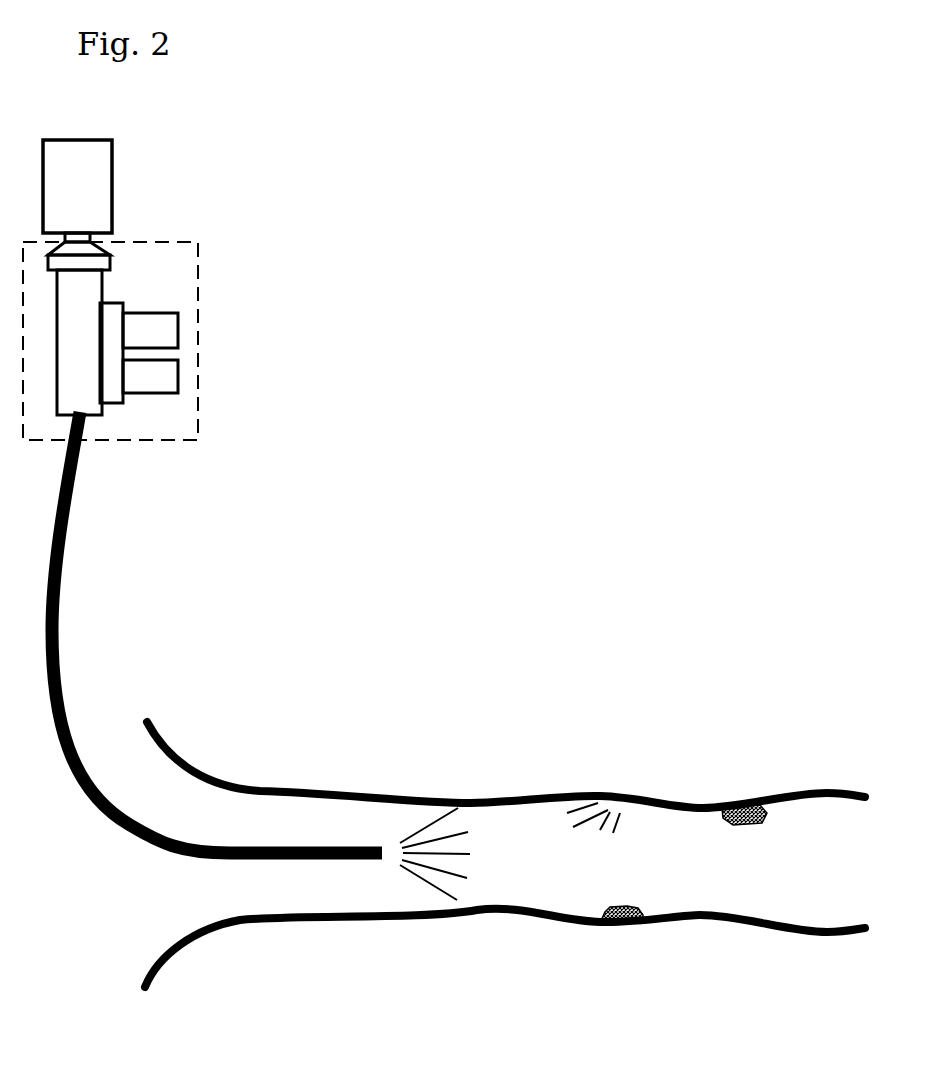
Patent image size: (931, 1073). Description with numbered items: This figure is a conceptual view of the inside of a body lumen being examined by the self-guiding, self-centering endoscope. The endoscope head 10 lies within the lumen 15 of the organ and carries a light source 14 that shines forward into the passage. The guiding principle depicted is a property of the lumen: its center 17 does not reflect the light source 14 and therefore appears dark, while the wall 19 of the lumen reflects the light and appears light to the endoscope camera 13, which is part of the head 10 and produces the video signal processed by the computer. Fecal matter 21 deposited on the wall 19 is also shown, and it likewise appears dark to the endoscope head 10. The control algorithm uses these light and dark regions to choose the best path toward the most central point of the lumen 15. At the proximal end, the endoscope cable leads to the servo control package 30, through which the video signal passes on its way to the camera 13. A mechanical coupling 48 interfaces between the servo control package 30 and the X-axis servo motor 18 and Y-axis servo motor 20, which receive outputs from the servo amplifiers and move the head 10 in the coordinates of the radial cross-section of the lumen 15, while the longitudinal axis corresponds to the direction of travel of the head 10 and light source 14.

The endoscope camera 13 is at (77, 186).
The servo control package 30 is at (198, 340).
The mechanical coupling 48 is at (113, 303).
The Y-axis servo motor 20 is at (150, 330).
The X-axis servo motor 18 is at (150, 376).
The endoscope head 10 is at (360, 858).
The lumen 15 is at (710, 878).
The light source 14 is at (475, 838).
The wall of the lumen 19 is at (618, 793).
The center of the lumen 17 is at (613, 877).
The fecal matter 21 is at (747, 797).